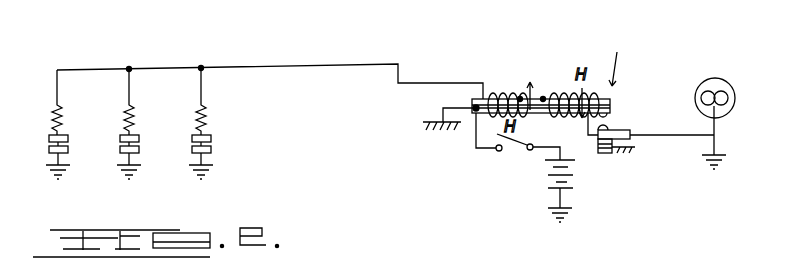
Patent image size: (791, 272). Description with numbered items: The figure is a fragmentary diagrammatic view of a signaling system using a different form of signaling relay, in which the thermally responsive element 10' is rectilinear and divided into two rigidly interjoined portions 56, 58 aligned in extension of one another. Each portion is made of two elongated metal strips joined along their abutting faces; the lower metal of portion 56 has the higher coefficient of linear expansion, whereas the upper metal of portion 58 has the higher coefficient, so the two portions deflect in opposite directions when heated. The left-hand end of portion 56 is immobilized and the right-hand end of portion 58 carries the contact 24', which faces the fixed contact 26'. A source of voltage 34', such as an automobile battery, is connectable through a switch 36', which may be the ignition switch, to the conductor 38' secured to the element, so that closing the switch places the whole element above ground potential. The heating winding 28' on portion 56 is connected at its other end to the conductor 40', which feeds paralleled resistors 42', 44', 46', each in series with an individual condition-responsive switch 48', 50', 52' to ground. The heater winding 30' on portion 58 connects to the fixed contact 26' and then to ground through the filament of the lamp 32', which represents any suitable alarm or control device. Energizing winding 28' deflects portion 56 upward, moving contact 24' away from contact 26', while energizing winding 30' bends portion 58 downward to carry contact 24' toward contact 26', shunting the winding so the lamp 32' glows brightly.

The element 10' is at (570, 78).
The contact 24' is at (629, 106).
The fixed contact 26' is at (635, 126).
The heating winding 28' is at (518, 79).
The heater winding 30' is at (570, 77).
The lamp 32' is at (683, 101).
The source of voltage 34' is at (588, 184).
The switch 36' is at (497, 152).
The conductor 38' is at (436, 151).
The conductor 40' is at (270, 61).
The resistor 42' is at (79, 102).
The resistor 44' is at (151, 102).
The resistor 46' is at (229, 101).
The condition-responsive switch 48' is at (78, 144).
The condition-responsive switch 50' is at (153, 144).
The condition-responsive switch 52' is at (234, 142).
The portion 56 is at (488, 99).
The portion 58 is at (624, 57).